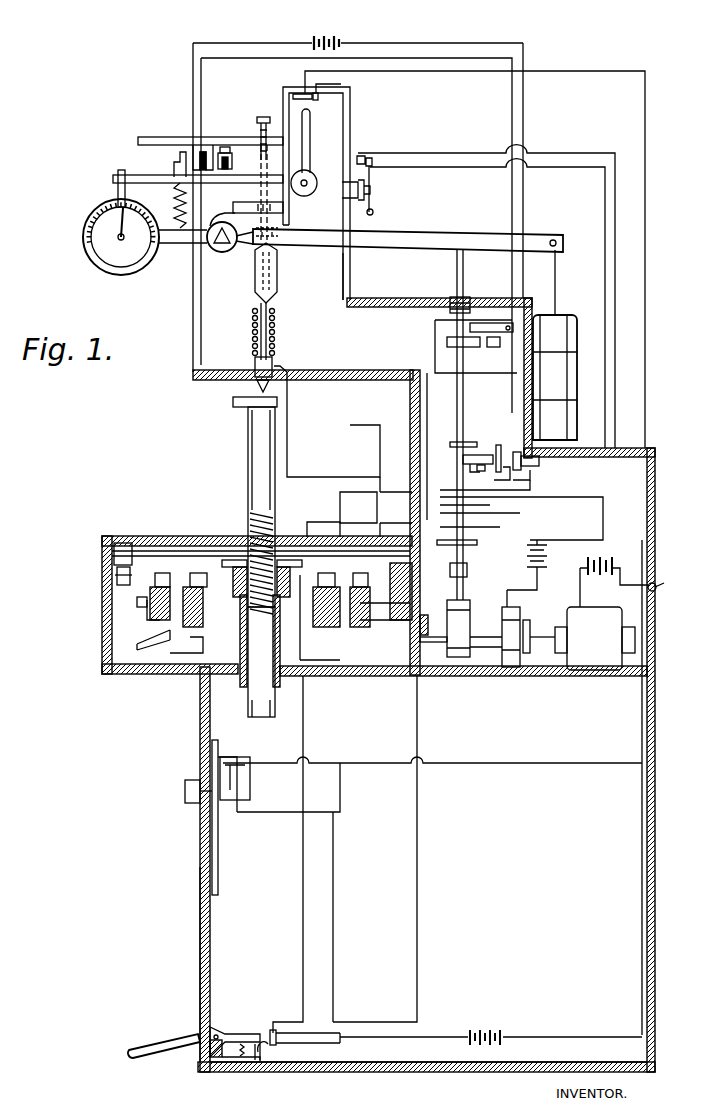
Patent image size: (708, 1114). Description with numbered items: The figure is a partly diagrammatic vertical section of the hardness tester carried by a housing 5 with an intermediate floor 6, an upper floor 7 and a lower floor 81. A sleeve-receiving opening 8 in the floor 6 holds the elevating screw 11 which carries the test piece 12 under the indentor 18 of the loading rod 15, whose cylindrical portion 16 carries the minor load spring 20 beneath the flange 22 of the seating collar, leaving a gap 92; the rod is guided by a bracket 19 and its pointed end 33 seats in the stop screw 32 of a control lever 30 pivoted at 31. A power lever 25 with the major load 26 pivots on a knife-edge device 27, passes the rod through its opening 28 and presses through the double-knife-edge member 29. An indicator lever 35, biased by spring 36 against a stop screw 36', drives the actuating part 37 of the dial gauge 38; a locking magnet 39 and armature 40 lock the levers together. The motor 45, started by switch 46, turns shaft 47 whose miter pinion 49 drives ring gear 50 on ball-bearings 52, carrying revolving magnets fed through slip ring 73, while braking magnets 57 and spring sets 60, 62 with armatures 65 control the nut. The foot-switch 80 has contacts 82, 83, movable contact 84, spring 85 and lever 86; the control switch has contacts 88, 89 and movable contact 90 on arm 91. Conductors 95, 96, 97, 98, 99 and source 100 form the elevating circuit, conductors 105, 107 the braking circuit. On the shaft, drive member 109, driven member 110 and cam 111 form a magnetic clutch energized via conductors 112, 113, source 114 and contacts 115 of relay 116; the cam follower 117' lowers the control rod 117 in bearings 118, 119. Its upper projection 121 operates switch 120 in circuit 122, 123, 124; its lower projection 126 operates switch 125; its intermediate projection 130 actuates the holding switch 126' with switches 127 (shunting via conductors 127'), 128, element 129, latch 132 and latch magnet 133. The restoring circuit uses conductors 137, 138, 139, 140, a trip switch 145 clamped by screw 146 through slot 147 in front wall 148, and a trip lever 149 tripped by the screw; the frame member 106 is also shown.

The housing or frame 5 is at (655, 710).
The intermediate partition or floor 6 is at (470, 680).
The upper partition or floor 7 is at (372, 371).
The sleeve-receiving opening 8 is at (280, 690).
The elevating screw 11 is at (276, 712).
The test piece 12 is at (240, 405).
The loading rod or indentor-member 15 is at (259, 184).
The enlarged lower cylindrical portion 16 is at (250, 362).
The indentor or penetrator 18 is at (270, 388).
The bracket 19 is at (233, 206).
The minor load spring 20 is at (252, 330).
The upper end flange 22 is at (250, 312).
The power or major load lever 25 is at (425, 229).
The major load 26 is at (555, 345).
The knife-edge device 27 is at (218, 251).
The intermediate opening 28 is at (288, 224).
The tubular double-knife-edge member 29 is at (255, 288).
The control lever 30 is at (210, 137).
The pivot 31 is at (311, 176).
The adjustable stop screw 32 is at (259, 117).
The upper pointed end 33 is at (236, 150).
The indicator actuating lever 35 is at (132, 175).
The spring 36 is at (167, 202).
The adjustable stop screw 36' is at (224, 120).
The actuating part 37 is at (117, 190).
The indicating dial gauge 38 is at (98, 262).
The locking electro-magnet 39 is at (190, 137).
The flexibly mounted armature 40 is at (172, 150).
The motor 45 is at (577, 654).
The starting switch 46 is at (658, 580).
The motor shaft 47 is at (537, 642).
The miter pinion 49 is at (367, 676).
The inner lower ring gear 50 is at (203, 630).
The ball-bearings 52 is at (155, 635).
The braking magnets 57 is at (112, 572).
The spring disk or set of radial flat springs 60 is at (218, 575).
The spring disk or set of radial flat springs 62 is at (222, 548).
The armatures 65 is at (122, 543).
The slip ring 73 is at (137, 606).
The double-throw main or foot-switch 80 is at (226, 1030).
The lower floor 81 is at (380, 1072).
The normally engaged fixed contact 82 is at (247, 1062).
The normally disengaged fixed contact 83 is at (274, 1026).
The foot operated contact 84 is at (268, 1030).
The spring 85 is at (218, 1062).
The foot lever 86 is at (174, 1033).
The fixed contact 88 is at (300, 91).
The fixed contact 89 is at (341, 84).
The movable contact 90 is at (312, 100).
The arm 91 is at (311, 135).
The gap 92 is at (280, 358).
The conductor 95 is at (312, 676).
The conductor 96 is at (312, 522).
The conductor 97 is at (372, 478).
The conductor 98 is at (385, 75).
The conductor 99 is at (469, 1035).
The current source 100 is at (490, 1028).
The conductor 105 is at (350, 122).
The frame member 106 is at (350, 266).
The conductor 107 is at (420, 698).
The magnet carrying drive member 109 is at (522, 615).
The driven clutch member 110 is at (498, 648).
The cam 111 is at (470, 610).
The conductor 112 is at (486, 152).
The conductor 113 is at (455, 166).
The current source 114 is at (547, 553).
The relay contacts 115 is at (372, 160).
The clutch control relay 116 is at (342, 192).
The major-load control rod 117 is at (461, 425).
The cam follower 117' is at (434, 625).
The bearing 118 is at (455, 547).
The bearing 119 is at (470, 304).
The upper switch 120 is at (500, 347).
The upper projection 121 is at (447, 341).
The conductor 122 is at (524, 52).
The conductor 123 is at (511, 92).
The conductor 124 is at (290, 52).
The normally closed switch 125 is at (410, 510).
The lower projection 126 is at (476, 574).
The double holding-switch 126' is at (487, 424).
The normally open switch 127 is at (466, 507).
The conductors 127' is at (416, 435).
The normally closed switch 128 is at (498, 472).
The movable element 129 is at (498, 452).
The intermediate projection 130 is at (468, 440).
The latch 132 is at (540, 472).
The latch magnet 133 is at (540, 460).
The conductor 137 is at (336, 768).
The conductor 138 is at (540, 490).
The conductor 139 is at (372, 510).
The conductor 140 is at (392, 764).
The trip switch 145 is at (236, 757).
The clamping screw 146 is at (190, 780).
The slot 147 is at (210, 805).
The front wall 148 is at (198, 995).
The trip lever 149 is at (256, 757).